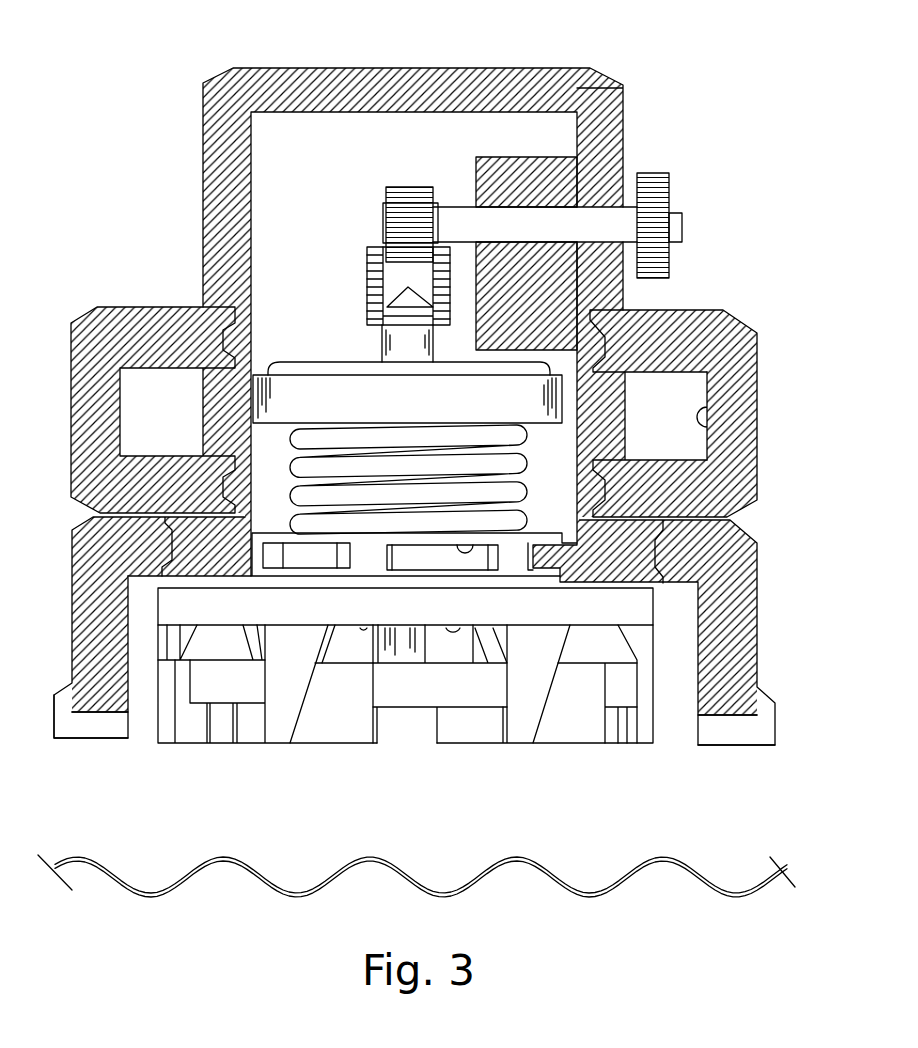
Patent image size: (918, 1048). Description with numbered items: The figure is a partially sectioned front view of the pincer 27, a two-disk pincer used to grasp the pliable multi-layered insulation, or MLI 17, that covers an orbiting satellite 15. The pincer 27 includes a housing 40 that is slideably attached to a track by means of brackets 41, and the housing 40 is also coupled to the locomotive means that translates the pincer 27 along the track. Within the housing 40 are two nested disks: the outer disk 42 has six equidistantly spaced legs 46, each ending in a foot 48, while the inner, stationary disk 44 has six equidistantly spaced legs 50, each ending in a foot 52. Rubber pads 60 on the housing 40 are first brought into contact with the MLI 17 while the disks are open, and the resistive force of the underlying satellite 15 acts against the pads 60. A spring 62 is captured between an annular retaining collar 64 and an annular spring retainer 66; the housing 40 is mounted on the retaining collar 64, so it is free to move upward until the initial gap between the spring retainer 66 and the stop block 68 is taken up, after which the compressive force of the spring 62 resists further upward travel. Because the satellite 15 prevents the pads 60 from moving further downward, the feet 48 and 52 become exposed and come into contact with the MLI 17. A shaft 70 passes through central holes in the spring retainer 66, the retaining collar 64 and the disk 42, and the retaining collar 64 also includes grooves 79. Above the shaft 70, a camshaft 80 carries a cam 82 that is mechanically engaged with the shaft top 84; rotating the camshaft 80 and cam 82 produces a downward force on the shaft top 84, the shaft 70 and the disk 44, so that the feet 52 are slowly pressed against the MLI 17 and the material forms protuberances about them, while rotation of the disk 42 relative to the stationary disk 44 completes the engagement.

The satellite 15 is at (376, 910).
The multi-layered insulation (MLI) 17 is at (232, 857).
The pincer 27 is at (126, 157).
The housing 40 is at (603, 72).
The brackets 41 is at (707, 428).
The disk 42 is at (653, 605).
The disk 44 is at (405, 710).
The legs 46 is at (301, 660).
The foot 48 is at (273, 744).
The legs 50 is at (348, 704).
The foot 52 is at (343, 745).
The rubber pads 60 is at (100, 740).
The spring 62 is at (290, 463).
The annular retaining collar 64 is at (378, 569).
The annular spring retainer 66 is at (323, 360).
The stop block 68 is at (540, 290).
The shaft 70 is at (380, 338).
The grooves 79 is at (470, 552).
The camshaft 80 is at (682, 223).
The cam 82 is at (386, 195).
The shaft top 84 is at (367, 268).